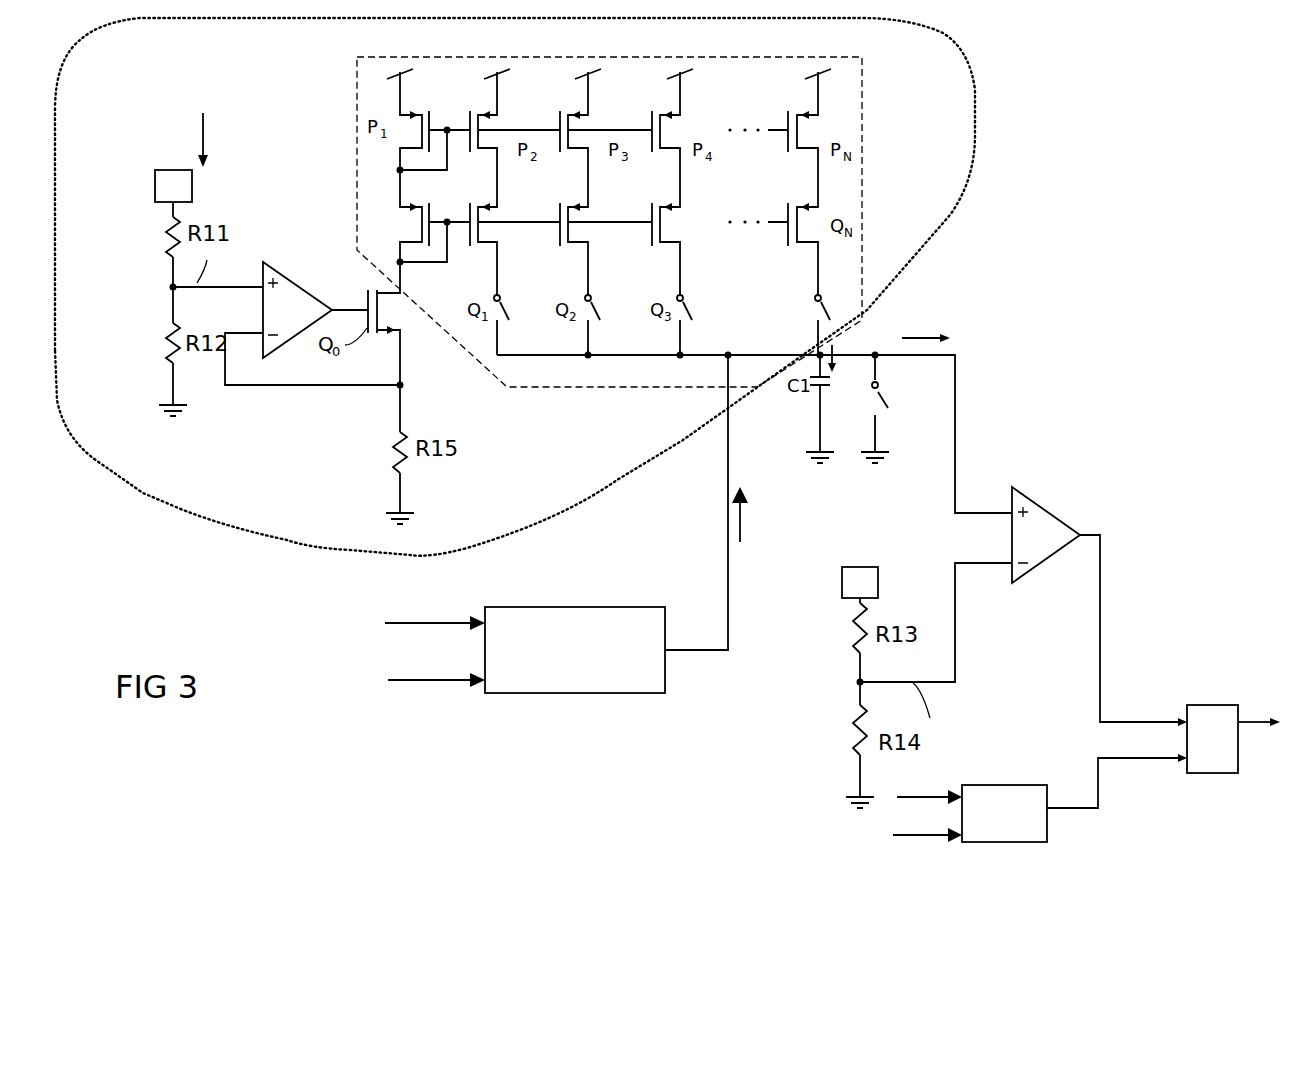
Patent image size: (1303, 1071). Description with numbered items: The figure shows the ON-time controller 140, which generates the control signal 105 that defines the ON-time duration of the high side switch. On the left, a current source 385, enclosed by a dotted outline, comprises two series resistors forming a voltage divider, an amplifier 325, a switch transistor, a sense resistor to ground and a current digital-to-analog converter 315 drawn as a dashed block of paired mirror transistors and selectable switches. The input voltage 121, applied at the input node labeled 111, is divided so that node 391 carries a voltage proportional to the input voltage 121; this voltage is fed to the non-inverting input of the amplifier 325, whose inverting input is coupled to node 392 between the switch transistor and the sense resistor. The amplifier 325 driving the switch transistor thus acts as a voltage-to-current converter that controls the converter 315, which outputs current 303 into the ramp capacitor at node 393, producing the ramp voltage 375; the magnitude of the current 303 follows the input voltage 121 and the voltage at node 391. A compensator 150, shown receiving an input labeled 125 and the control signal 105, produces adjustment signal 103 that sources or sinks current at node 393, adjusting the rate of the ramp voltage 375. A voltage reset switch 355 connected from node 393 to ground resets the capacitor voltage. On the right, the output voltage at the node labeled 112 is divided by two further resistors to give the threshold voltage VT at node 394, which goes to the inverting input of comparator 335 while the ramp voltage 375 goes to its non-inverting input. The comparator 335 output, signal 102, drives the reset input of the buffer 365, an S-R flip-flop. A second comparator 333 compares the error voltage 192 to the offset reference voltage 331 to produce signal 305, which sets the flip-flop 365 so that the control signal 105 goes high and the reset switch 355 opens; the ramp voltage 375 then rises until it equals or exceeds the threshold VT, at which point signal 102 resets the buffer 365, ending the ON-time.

The input voltage 121 is at (205, 138).
The input voltage node 111 is at (192, 192).
The node 391 is at (168, 285).
The node 392 is at (268, 387).
The amplifier 325 is at (297, 303).
The current digital-to-analog converter 315 is at (866, 117).
The current source 385 is at (982, 118).
The ON-time controller 140 is at (1183, 315).
The current 303 is at (830, 344).
The ramp voltage 375 is at (932, 338).
The node 393 is at (707, 350).
The voltage reset switch 355 is at (880, 397).
The adjustment signal 103 is at (747, 530).
The switching period factor signal 125 is at (401, 617).
The control signal 105 is at (1255, 687).
The compensator 150 is at (575, 650).
The output voltage node 112 is at (878, 582).
The comparator 335 is at (1046, 535).
The signal 102 is at (1100, 605).
The threshold voltage node 394 is at (955, 638).
The offset reference voltage 331 is at (923, 788).
The comparator 333 is at (1004, 813).
The error voltage 192 is at (913, 840).
The signal 305 is at (1120, 760).
The buffer 365 is at (1213, 773).